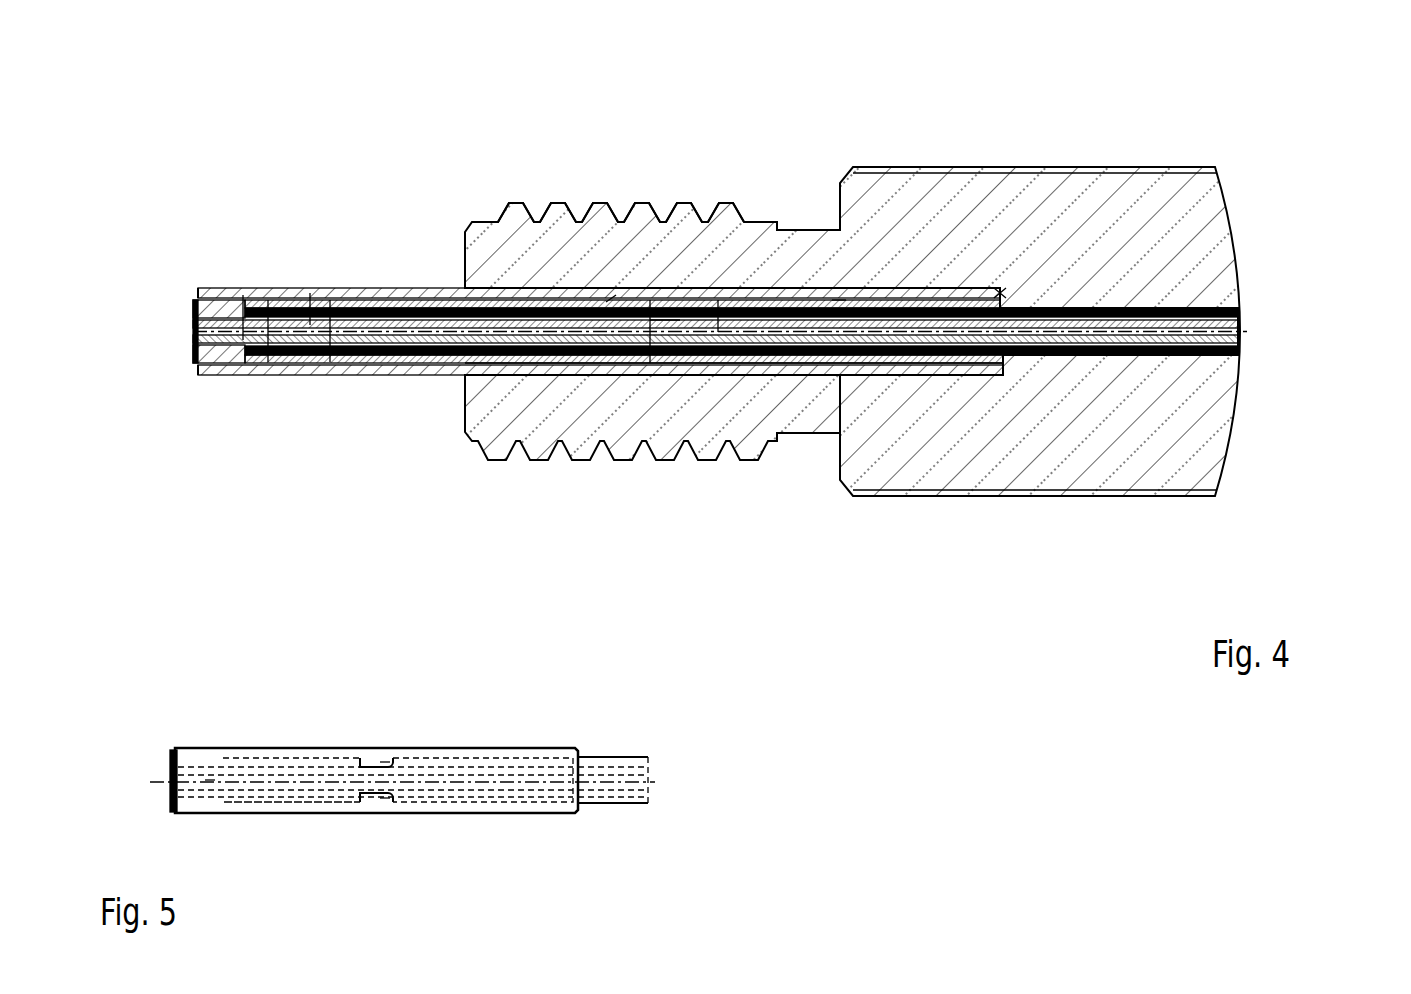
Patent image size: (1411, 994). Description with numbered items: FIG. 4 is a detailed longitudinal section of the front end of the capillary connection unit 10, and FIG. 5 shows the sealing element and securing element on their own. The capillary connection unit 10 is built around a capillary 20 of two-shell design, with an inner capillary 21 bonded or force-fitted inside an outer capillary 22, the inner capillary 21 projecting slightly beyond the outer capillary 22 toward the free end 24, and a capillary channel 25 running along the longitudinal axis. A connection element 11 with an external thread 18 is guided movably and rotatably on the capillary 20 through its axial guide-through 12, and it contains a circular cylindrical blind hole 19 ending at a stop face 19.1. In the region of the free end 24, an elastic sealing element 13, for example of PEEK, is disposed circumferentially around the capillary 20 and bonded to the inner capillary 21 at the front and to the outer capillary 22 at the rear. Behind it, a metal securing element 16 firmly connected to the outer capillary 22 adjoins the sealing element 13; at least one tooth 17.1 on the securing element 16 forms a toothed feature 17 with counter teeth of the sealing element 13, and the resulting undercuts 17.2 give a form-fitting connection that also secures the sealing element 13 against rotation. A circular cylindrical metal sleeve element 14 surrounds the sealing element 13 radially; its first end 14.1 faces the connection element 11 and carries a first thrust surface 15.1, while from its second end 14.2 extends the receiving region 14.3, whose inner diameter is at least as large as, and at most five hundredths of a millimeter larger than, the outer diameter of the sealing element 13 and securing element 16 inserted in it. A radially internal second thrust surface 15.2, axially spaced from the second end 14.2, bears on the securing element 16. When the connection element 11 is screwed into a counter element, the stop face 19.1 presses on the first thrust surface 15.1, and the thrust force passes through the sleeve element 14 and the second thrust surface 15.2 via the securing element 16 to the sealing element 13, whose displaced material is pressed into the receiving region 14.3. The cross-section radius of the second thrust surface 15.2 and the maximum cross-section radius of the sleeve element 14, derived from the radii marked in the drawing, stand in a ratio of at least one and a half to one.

In FIG. 4, the capillary connection unit 10 is at (340, 108).
In FIG. 4, the connection element 11 is at (995, 167).
In FIG. 4, the axial guide-through 12 is at (1157, 360).
In FIG. 4, the sealing element 13 is at (193, 353).
In FIG. 5, the sealing element 13 is at (245, 748).
In FIG. 4, the sleeve element 14 is at (797, 290).
In FIG. 4, the first end 14.1 is at (1005, 363).
In FIG. 4, the second end 14.2 is at (197, 290).
In FIG. 4, the receiving region 14.3 is at (375, 380).
In FIG. 4, the first thrust surface 15.1 is at (1003, 296).
In FIG. 4, the second thrust surface 15.2 is at (603, 363).
In FIG. 5, the securing element 16 is at (510, 748).
In FIG. 5, the toothed feature 17 is at (370, 740).
In FIG. 5, the tooth 17.1 is at (385, 762).
In FIG. 5, the undercuts 17.2 is at (383, 800).
In FIG. 4, the thread 18 is at (628, 212).
In FIG. 4, the blind hole 19 is at (840, 380).
In FIG. 4, the stop face 19.1 is at (998, 292).
In FIG. 4, the capillary 20 is at (1108, 307).
In FIG. 5, the capillary 20 is at (613, 757).
In FIG. 4, the inner capillary 21 is at (1240, 327).
In FIG. 4, the outer capillary 22 is at (1240, 315).
In FIG. 4, the free end 24 is at (193, 325).
In FIG. 5, the free end 24 is at (170, 773).
In FIG. 4, the capillary channel 25 is at (310, 293).